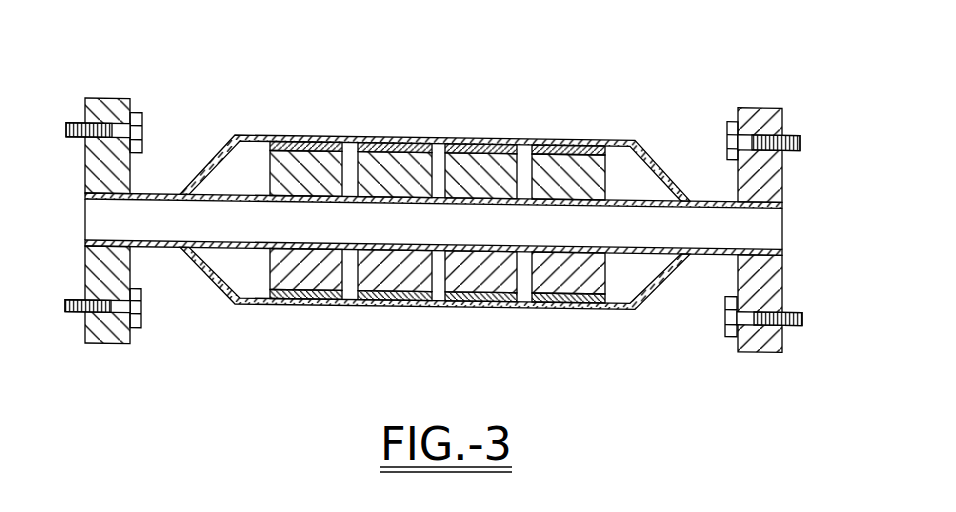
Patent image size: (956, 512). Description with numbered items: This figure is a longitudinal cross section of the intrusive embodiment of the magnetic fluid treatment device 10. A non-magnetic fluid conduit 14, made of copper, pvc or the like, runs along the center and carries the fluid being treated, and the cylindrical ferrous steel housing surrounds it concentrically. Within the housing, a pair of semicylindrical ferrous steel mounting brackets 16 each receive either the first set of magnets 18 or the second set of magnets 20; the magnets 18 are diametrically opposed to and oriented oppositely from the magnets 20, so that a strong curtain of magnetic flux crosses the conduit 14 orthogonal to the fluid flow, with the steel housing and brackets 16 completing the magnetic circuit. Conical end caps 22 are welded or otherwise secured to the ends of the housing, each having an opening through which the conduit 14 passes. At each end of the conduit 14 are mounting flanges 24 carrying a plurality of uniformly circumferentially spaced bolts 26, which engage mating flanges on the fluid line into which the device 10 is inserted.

The magnetic fluid treatment device 10 is at (603, 110).
The fluid conduit 14 is at (710, 252).
The mounting brackets 16 is at (323, 139).
The first set of magnets 18 is at (300, 157).
The second set of magnets 20 is at (302, 284).
The conical end caps 22 is at (213, 283).
The mounting flanges 24 is at (115, 98).
The bolts 26 is at (72, 312).